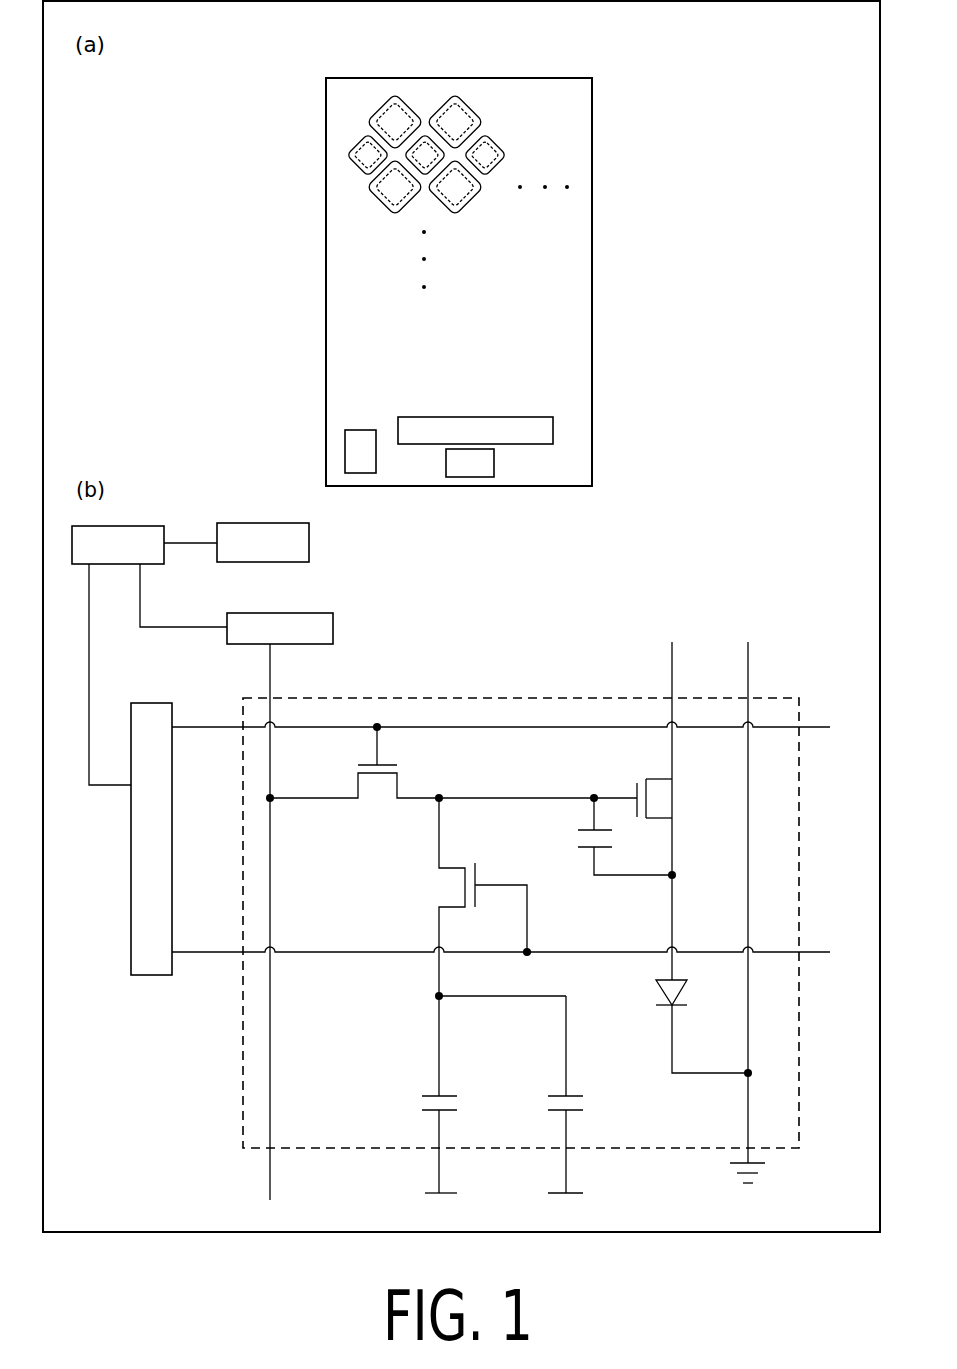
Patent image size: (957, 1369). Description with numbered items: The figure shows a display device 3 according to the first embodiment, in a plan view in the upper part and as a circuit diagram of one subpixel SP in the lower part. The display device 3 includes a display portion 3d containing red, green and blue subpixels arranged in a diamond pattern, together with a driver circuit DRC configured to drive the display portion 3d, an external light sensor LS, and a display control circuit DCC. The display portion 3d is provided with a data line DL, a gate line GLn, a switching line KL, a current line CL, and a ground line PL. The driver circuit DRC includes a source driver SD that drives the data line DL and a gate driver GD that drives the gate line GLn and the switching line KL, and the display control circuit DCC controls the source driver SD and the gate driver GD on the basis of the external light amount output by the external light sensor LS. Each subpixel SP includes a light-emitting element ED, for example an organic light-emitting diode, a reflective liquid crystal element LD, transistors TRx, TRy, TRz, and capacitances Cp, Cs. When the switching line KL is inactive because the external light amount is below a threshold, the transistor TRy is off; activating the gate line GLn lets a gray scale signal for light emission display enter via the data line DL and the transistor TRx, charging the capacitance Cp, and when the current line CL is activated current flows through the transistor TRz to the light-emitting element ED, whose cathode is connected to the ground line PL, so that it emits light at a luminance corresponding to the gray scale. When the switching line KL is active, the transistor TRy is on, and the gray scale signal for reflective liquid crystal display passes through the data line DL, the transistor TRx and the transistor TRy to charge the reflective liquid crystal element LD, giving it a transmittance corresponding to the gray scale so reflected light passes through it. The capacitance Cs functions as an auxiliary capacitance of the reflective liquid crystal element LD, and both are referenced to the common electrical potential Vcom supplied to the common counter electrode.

The display device 3 is at (470, 78).
The display portion 3d is at (575, 114).
The external light sensor LS is at (296, 496).
The driver circuit DRC is at (475, 431).
The display control circuit DCC is at (283, 617).
The source driver SD is at (280, 613).
The gate driver GD is at (152, 703).
The data line DL is at (270, 660).
The gate line GLn is at (210, 727).
The switching line KL is at (209, 952).
The subpixel SP is at (497, 695).
The transistor TRx is at (388, 763).
The transistor TRy is at (476, 878).
The transistor TRz is at (636, 785).
The capacitance Cp is at (576, 816).
The current line CL is at (672, 656).
The ground line PL is at (748, 656).
The light-emitting element ED is at (690, 993).
The reflective liquid crystal element LD is at (461, 1104).
The capacitance Cs is at (583, 1096).
The common electrical potential Vcom is at (503, 1209).